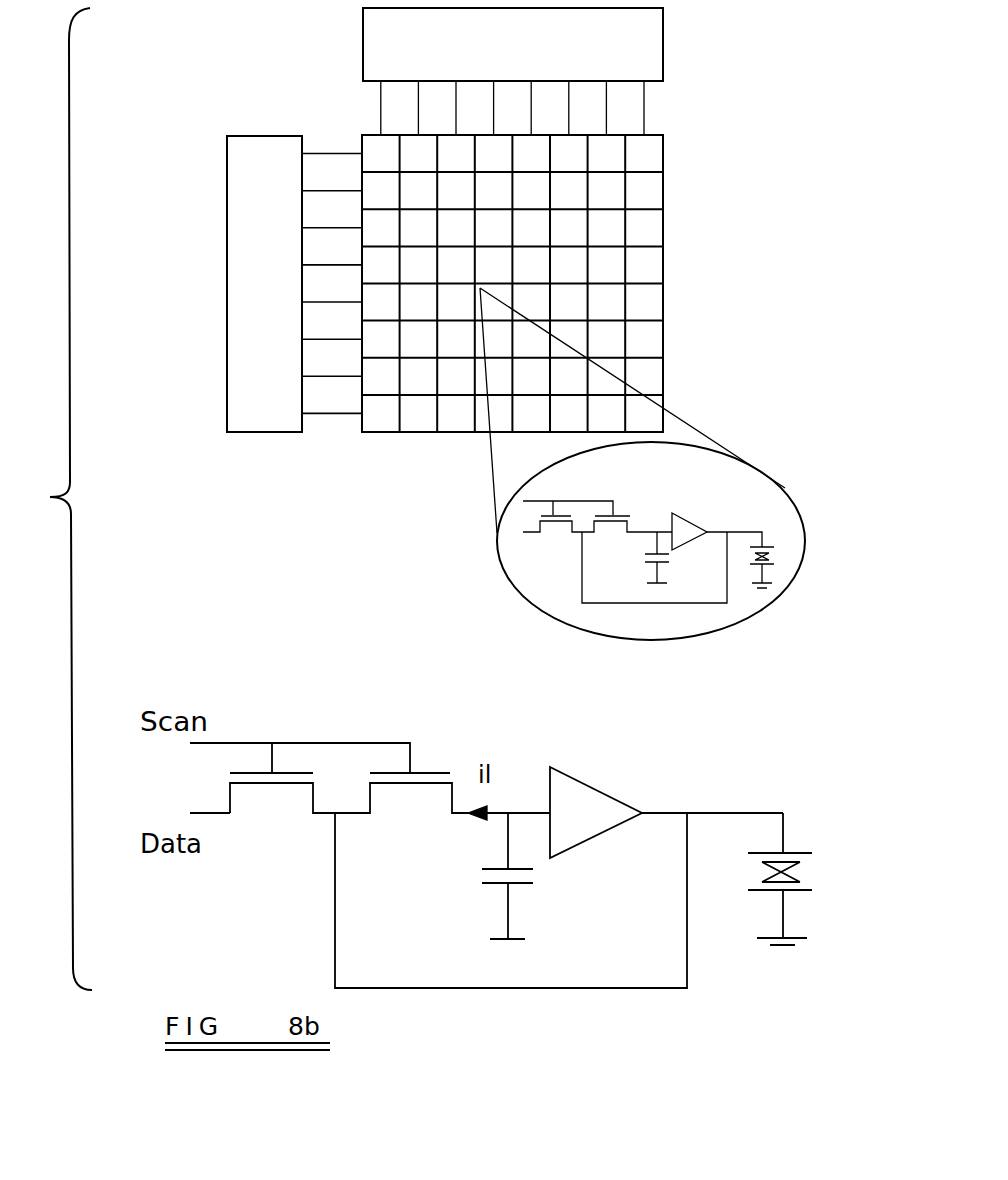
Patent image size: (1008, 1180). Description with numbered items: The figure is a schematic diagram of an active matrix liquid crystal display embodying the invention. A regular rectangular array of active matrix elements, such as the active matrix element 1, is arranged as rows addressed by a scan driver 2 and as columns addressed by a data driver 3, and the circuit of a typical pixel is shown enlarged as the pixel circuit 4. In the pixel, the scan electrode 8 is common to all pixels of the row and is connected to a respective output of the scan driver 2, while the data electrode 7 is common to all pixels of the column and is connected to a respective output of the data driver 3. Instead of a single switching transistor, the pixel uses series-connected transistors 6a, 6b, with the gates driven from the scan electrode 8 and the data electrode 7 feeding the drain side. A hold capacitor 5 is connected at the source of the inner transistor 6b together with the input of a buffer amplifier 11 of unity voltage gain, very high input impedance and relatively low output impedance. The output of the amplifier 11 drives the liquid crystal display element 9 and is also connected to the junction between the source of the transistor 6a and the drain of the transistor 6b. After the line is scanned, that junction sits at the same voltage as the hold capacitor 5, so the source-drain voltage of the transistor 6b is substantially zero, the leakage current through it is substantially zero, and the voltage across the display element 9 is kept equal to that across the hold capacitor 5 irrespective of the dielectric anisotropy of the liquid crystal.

The active matrix element 1 is at (645, 187).
The scan driver 2 is at (232, 268).
The data driver 3 is at (654, 45).
The pixel circuit 4 is at (785, 488).
The hold capacitor 5 is at (522, 883).
The transistor 6a is at (280, 783).
The transistor 6b is at (436, 773).
The data electrode 7 is at (200, 813).
The scan electrode 8 is at (350, 743).
The liquid crystal display element 9 is at (795, 853).
The buffer amplifier 11 is at (605, 790).